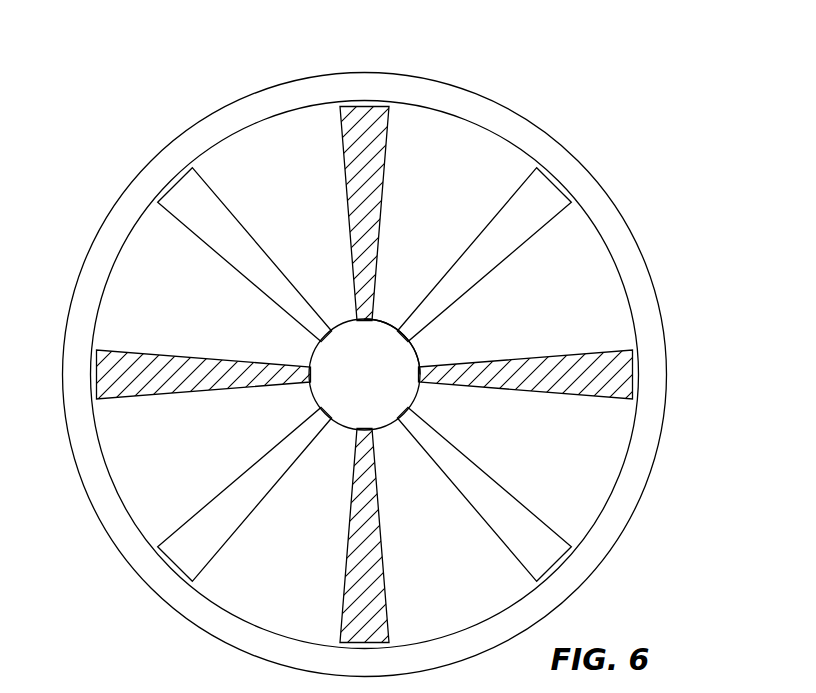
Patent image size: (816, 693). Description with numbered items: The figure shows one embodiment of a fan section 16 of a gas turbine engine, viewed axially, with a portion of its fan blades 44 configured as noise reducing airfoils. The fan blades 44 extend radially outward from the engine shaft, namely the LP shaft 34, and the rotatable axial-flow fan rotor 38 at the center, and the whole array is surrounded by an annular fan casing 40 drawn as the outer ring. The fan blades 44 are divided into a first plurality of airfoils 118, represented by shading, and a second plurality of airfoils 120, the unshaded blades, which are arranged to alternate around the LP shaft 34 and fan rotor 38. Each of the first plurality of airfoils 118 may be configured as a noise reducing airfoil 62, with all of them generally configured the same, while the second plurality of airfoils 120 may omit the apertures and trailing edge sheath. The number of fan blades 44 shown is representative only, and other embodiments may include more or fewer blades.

The fan section 16 is at (644, 118).
The annular fan casing 40 is at (112, 207).
The low pressure drive shaft 34 is at (308, 356).
The fan rotor 38 is at (413, 357).
The fan blades 44 is at (350, 222).
The airfoil 62 is at (432, 298).
The first plurality of airfoils 118 is at (387, 135).
The second plurality of airfoils 120 is at (200, 520).